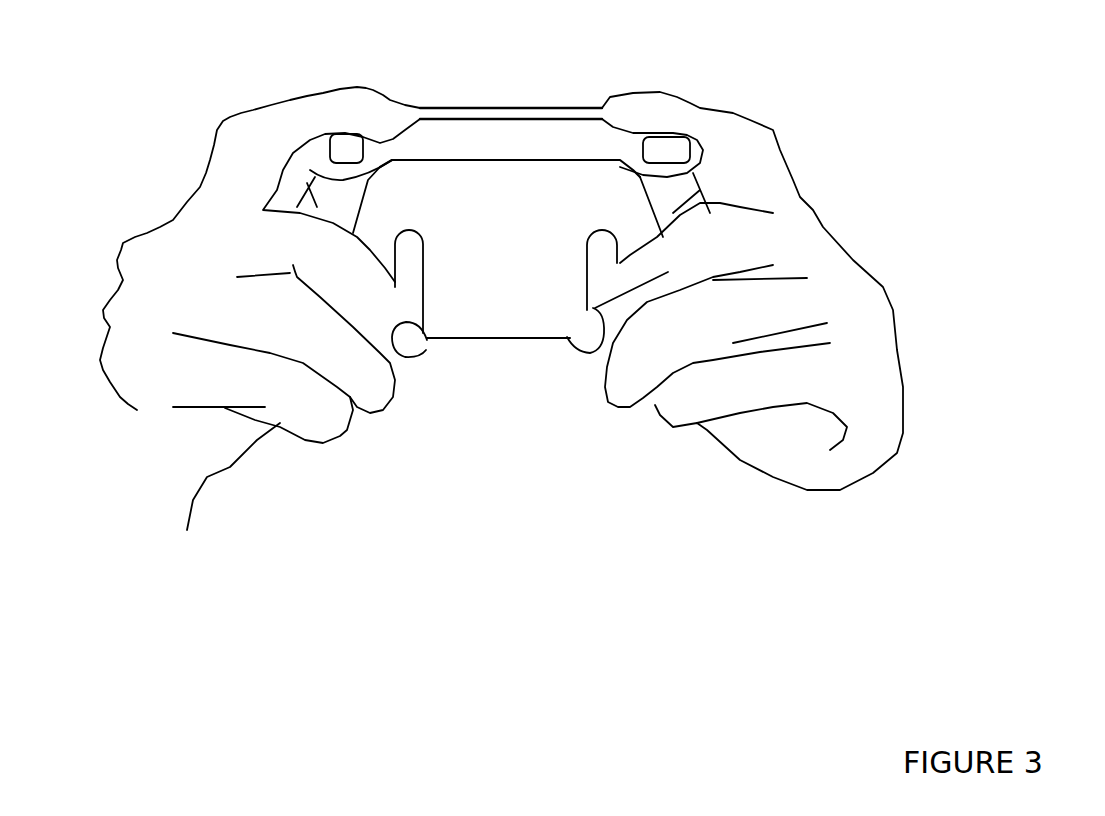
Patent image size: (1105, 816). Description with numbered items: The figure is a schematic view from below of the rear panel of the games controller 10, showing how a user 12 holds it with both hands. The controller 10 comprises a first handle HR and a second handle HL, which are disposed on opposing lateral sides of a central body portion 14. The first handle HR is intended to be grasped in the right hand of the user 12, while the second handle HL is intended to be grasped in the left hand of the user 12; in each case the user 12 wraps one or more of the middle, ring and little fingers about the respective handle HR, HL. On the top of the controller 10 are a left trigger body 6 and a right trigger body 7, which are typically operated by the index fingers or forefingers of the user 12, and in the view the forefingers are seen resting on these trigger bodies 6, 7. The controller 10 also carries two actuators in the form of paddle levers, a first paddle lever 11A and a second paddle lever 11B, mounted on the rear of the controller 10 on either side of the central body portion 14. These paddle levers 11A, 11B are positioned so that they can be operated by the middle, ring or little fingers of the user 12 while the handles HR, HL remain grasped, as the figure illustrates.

The left trigger body 6 is at (673, 140).
The right trigger body 7 is at (343, 147).
The controller 10 is at (507, 122).
The first paddle lever 11A is at (407, 283).
The second paddle lever 11B is at (600, 247).
The user 12 is at (353, 272).
The central body portion 14 is at (517, 251).
The first handle HR is at (317, 207).
The second handle HL is at (673, 213).